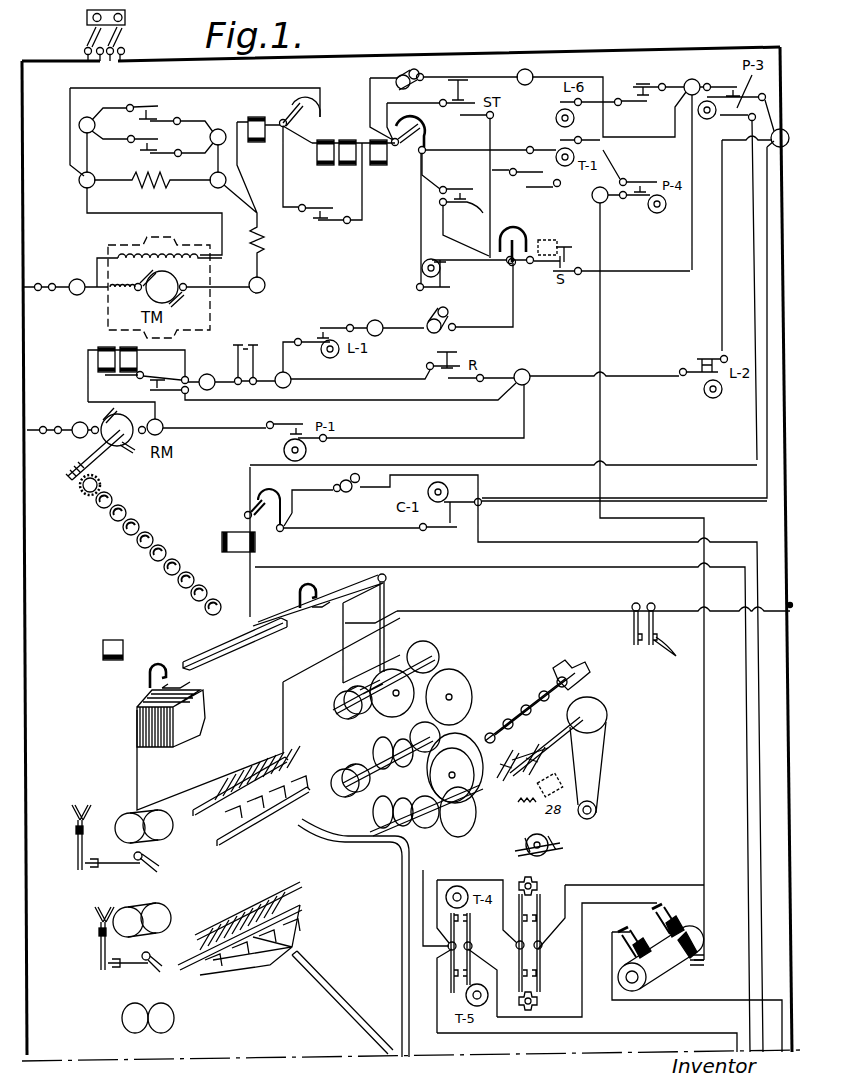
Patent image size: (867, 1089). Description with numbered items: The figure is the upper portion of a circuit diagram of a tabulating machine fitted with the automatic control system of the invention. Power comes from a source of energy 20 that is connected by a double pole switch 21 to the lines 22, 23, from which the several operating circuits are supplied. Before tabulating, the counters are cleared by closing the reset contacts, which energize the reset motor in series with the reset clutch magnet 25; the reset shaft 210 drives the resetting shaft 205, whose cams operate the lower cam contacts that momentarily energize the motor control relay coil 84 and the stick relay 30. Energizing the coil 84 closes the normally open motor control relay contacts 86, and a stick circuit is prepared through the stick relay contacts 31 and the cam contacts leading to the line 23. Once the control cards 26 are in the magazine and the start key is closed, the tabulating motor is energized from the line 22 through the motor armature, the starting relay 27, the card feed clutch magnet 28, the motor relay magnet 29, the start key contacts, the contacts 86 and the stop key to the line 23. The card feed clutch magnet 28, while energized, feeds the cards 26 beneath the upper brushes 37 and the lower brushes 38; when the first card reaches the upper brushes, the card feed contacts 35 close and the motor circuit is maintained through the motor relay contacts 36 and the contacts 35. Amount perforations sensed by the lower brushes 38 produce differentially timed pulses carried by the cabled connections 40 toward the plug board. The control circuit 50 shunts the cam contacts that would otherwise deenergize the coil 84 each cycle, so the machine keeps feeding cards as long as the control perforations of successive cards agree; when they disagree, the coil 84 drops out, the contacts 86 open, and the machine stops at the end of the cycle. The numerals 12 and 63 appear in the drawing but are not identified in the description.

The junction 12 is at (787, 147).
The source of energy 20 is at (128, 20).
The double pole switch 21 is at (83, 44).
The line 22 is at (27, 212).
The line 23 is at (565, 58).
The reset clutch magnet 25 is at (100, 357).
The control cards 26 is at (175, 727).
The starting relay 27 is at (265, 142).
The card feed clutch magnet 28 is at (326, 147).
The motor relay magnet 29 is at (390, 160).
The stick relay 30 is at (232, 530).
The stick relay contacts 31 is at (272, 499).
The card feed contacts 35 is at (485, 204).
The motor relay contacts 36 is at (424, 134).
The upper brushes 37 is at (212, 822).
The lower brushes 38 is at (182, 940).
The cabled connections 40 is at (332, 971).
The control circuit 50 is at (545, 565).
The relay 63 is at (449, 271).
The motor control relay coil 84 is at (590, 236).
The motor control relay contacts 86 is at (530, 252).
The resetting shaft 205 is at (137, 543).
The reset shaft 210 is at (104, 460).